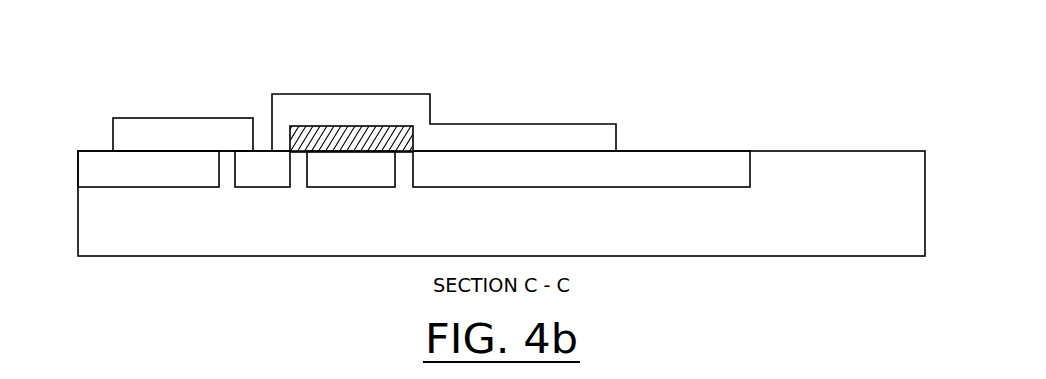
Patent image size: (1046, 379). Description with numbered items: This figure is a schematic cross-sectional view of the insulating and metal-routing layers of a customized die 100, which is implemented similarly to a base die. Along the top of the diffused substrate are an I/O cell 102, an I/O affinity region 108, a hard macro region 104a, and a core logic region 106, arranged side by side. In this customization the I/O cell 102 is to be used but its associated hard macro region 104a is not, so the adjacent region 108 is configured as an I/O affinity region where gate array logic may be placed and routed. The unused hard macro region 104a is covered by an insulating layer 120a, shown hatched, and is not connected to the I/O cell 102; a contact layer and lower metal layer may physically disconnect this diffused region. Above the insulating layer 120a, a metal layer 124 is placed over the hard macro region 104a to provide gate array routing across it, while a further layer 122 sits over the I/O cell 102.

The customized die 100 is at (138, 57).
The I/O cell 102 is at (193, 197).
The hard macro region 104a is at (409, 195).
The core logic region 106 is at (774, 193).
The I/O affinity region 108 is at (303, 197).
The insulating layer 120a is at (413, 105).
The contact layer 122 is at (160, 118).
The metal layer 124 is at (300, 95).